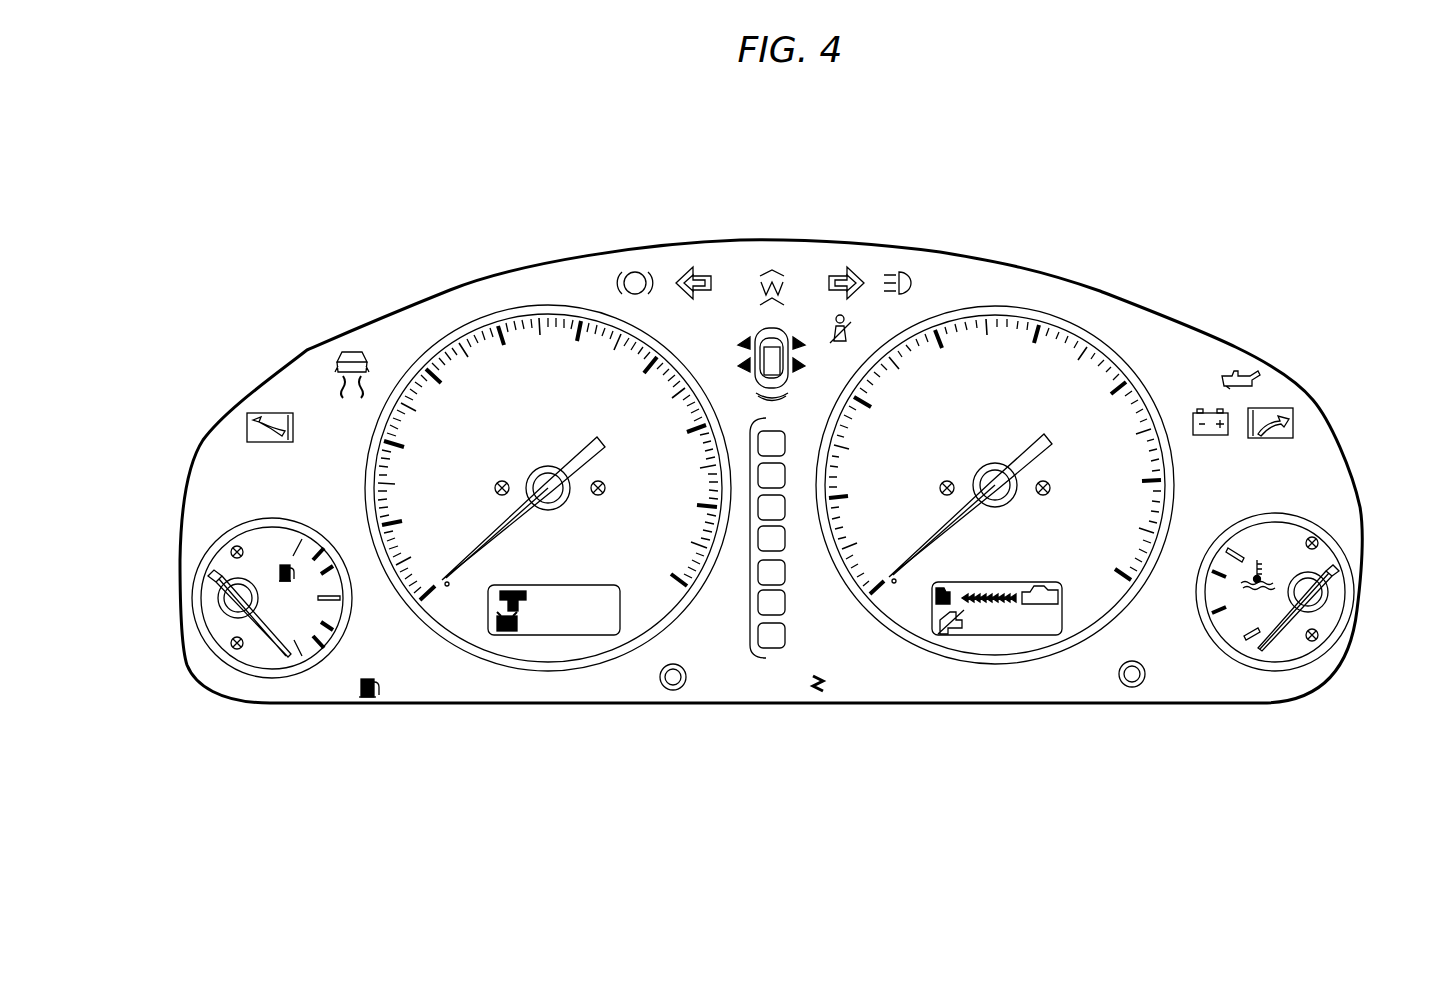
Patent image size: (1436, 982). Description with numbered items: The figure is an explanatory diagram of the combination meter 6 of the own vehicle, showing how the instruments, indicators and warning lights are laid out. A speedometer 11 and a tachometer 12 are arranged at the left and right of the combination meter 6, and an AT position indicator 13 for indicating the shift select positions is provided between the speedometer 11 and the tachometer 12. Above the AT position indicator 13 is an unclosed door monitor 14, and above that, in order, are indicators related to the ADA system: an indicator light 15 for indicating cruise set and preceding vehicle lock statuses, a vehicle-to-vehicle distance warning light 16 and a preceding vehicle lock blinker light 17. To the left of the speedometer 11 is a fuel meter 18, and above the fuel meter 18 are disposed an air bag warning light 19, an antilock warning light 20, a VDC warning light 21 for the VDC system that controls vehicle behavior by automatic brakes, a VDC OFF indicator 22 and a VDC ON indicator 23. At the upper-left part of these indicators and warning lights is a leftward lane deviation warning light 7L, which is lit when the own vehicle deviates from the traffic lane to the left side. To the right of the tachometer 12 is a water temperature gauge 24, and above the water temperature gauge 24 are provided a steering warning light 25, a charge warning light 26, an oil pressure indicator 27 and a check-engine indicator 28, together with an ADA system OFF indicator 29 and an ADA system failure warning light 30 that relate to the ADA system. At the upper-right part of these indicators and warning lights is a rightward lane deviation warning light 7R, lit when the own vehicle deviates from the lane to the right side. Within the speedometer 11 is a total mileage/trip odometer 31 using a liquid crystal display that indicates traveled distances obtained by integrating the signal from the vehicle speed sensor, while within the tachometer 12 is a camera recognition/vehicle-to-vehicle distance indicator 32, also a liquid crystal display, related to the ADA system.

The combination meter 6 is at (968, 200).
The leftward lane deviation warning light 7L is at (277, 412).
The rightward lane deviation warning light 7R is at (1287, 407).
The speedometer 11 is at (530, 312).
The tachometer 12 is at (1080, 318).
The AT position indicator 13 is at (746, 540).
The unclosed door monitor 14 is at (757, 328).
The indicator light 15 is at (841, 318).
The vehicle-to-vehicle distance warning light 16 is at (780, 277).
The preceding vehicle lock blinker light 17 is at (783, 315).
The fuel meter 18 is at (273, 679).
The air bag warning light 19 is at (228, 476).
The antilock warning light 20 is at (263, 468).
The VDC warning light 21 is at (327, 417).
The VDC OFF indicator 22 is at (343, 455).
The VDC ON indicator 23 is at (357, 350).
The water temperature gauge 24 is at (1276, 668).
The steering warning light 25 is at (1197, 505).
The charge warning light 26 is at (1224, 410).
The oil pressure indicator 27 is at (1235, 373).
The check-engine indicator 28 is at (1188, 343).
The ADA system OFF indicator 29 is at (1300, 467).
The ADA system failure warning light 30 is at (1353, 478).
The total mileage/trip odometer 31 is at (540, 640).
The camera recognition/vehicle-to-vehicle distance indicator 32 is at (1003, 636).